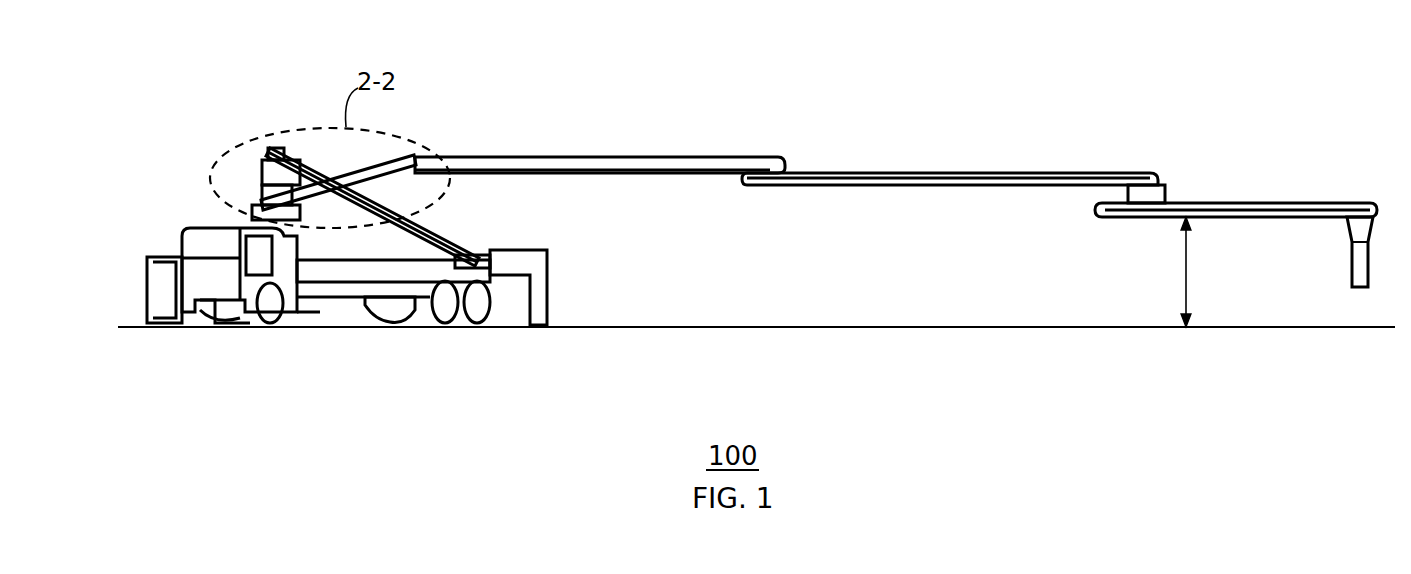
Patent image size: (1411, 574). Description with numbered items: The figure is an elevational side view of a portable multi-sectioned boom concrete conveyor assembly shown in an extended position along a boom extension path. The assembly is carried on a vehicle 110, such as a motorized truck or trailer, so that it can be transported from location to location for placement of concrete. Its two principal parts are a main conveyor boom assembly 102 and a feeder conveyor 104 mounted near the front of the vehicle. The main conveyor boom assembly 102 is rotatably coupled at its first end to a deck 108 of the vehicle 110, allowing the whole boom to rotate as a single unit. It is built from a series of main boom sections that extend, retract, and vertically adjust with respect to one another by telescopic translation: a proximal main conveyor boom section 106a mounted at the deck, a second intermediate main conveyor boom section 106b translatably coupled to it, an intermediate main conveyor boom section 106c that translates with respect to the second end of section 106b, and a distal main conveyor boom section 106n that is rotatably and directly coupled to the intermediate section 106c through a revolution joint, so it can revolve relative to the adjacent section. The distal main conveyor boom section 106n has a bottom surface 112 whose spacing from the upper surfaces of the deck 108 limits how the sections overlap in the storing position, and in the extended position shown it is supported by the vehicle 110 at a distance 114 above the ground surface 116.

The main conveyor boom assembly 102 is at (850, 123).
The feeder conveyor 104 is at (310, 165).
The proximal main conveyor boom section 106a is at (392, 165).
The second intermediate main conveyor boom section 106b is at (533, 163).
The intermediate main conveyor boom section 106c is at (940, 176).
The distal main conveyor boom section 106n is at (1212, 207).
The deck 108 is at (472, 263).
The vehicle 110 is at (327, 297).
The bottom surface 112 is at (1263, 217).
The distance 114 is at (1186, 262).
The ground surface 116 is at (965, 327).